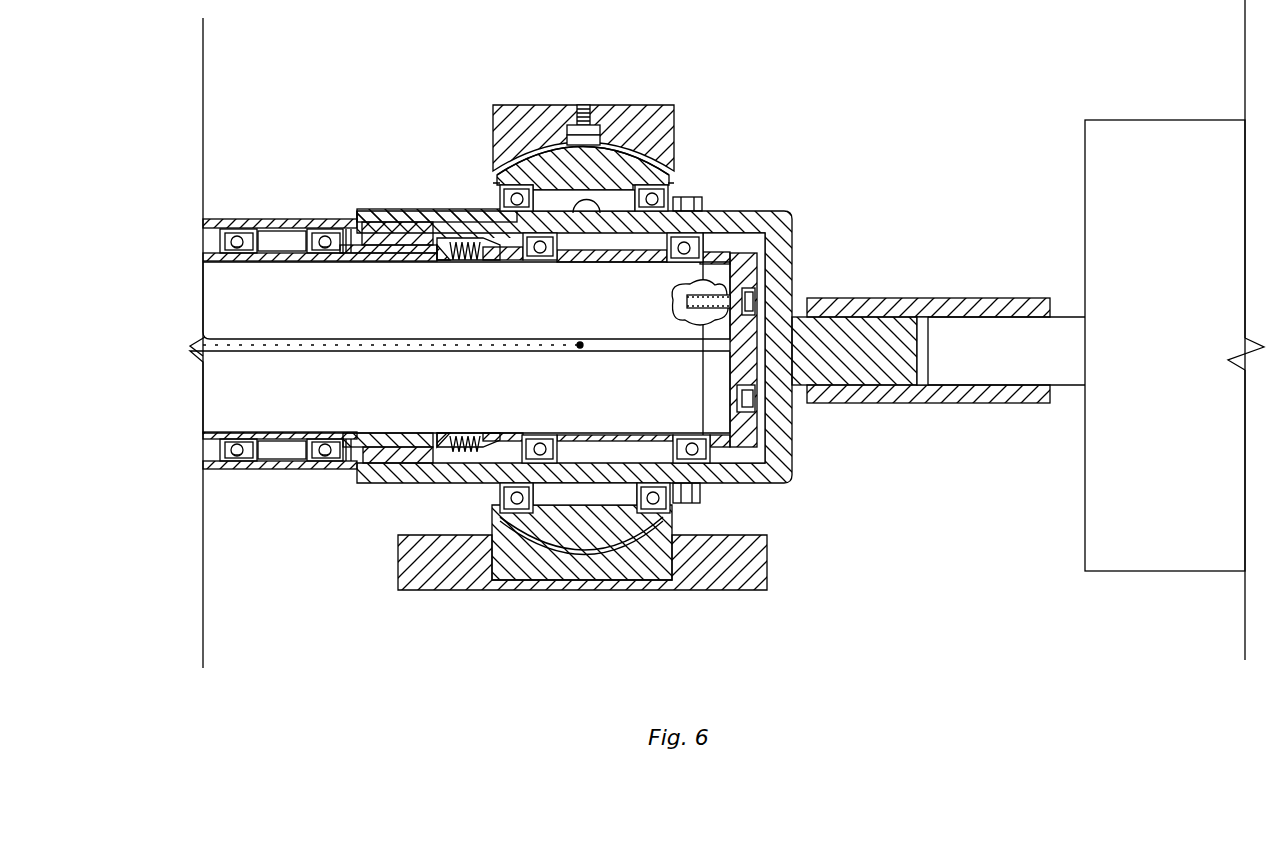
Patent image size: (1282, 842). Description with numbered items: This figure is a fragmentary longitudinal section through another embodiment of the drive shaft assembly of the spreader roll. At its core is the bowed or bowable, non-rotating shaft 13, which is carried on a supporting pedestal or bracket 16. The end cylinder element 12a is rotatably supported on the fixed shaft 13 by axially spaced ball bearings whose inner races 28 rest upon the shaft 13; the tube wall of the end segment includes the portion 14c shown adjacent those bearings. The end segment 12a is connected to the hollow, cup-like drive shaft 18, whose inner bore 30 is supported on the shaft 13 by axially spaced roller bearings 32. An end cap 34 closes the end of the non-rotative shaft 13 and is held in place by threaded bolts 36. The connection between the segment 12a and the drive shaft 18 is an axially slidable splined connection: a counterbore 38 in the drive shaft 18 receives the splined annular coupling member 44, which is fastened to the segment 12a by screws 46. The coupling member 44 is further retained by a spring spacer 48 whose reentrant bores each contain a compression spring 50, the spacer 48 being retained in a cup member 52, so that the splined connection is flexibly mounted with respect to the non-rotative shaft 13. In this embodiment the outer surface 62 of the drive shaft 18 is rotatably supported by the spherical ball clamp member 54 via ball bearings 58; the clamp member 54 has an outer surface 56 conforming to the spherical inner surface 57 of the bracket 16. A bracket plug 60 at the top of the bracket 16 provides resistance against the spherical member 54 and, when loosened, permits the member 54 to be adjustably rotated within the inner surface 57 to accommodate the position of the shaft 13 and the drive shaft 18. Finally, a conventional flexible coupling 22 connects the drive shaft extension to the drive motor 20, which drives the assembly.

The end segment 12a is at (328, 218).
The non-rotating shaft 13 is at (436, 329).
The inner tube wall 14c is at (290, 262).
The supporting bracket 16 is at (640, 113).
The drive shaft 18 is at (770, 211).
The drive motor 20 is at (1094, 246).
The flexible coupling 22 is at (951, 304).
The inner races 28 is at (237, 256).
The inner bore 30 is at (478, 222).
The roller bearings 32 is at (690, 198).
The end cap 34 is at (757, 243).
The threaded bolts 36 is at (713, 312).
The counterbore 38 is at (352, 470).
The annular coupling member 44 is at (410, 470).
The screws 46 is at (353, 218).
The spring spacer 48 is at (468, 432).
The compression spring 50 is at (460, 433).
The cup member 52 is at (538, 434).
The spherical ball clamp member 54 is at (668, 135).
The outer surface 56 is at (513, 168).
The inner surface 57 is at (665, 185).
The ball bearings 58 is at (546, 212).
The bracket plug 60 is at (584, 104).
The outer surface 62 is at (605, 213).